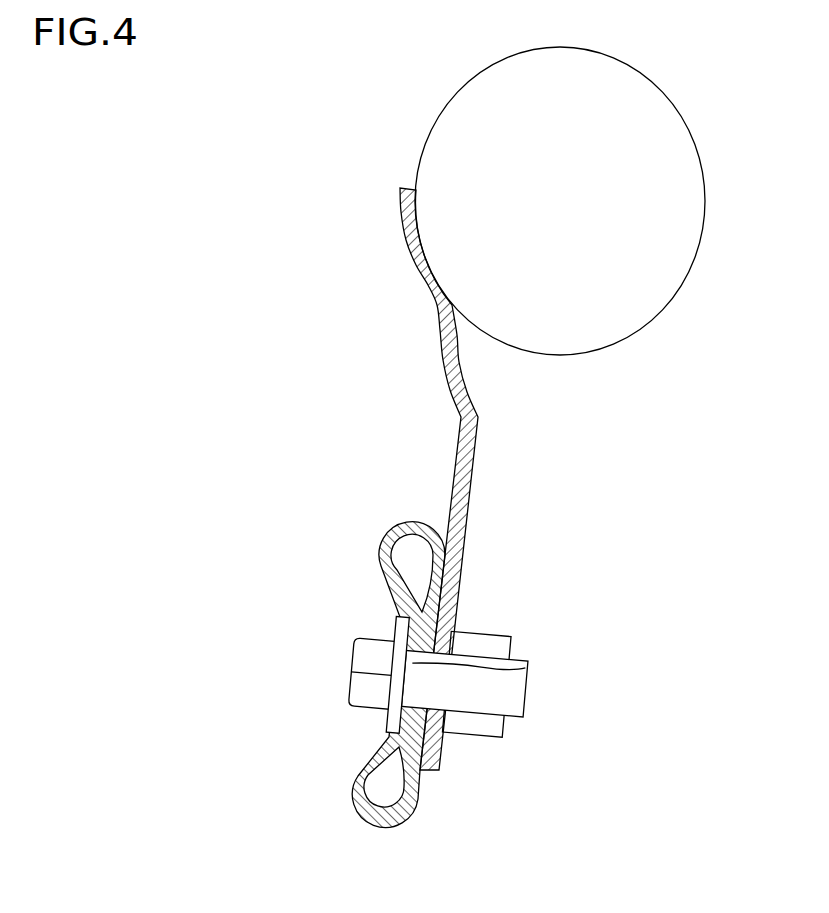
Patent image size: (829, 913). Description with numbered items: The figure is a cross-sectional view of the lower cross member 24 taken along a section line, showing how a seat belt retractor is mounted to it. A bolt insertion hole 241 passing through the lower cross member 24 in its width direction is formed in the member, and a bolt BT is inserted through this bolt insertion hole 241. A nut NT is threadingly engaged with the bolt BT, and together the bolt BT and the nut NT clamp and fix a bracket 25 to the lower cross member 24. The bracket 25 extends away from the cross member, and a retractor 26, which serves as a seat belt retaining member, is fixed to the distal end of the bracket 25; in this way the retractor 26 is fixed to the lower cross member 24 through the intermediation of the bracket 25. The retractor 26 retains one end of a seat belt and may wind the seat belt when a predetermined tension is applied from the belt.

The lower cross member 24 is at (412, 522).
The bracket 25 is at (471, 489).
The retractor (seat belt retaining member) 26 is at (705, 204).
The bolt insertion hole 241 is at (395, 663).
The bolt BT is at (350, 672).
The nut NT is at (494, 634).